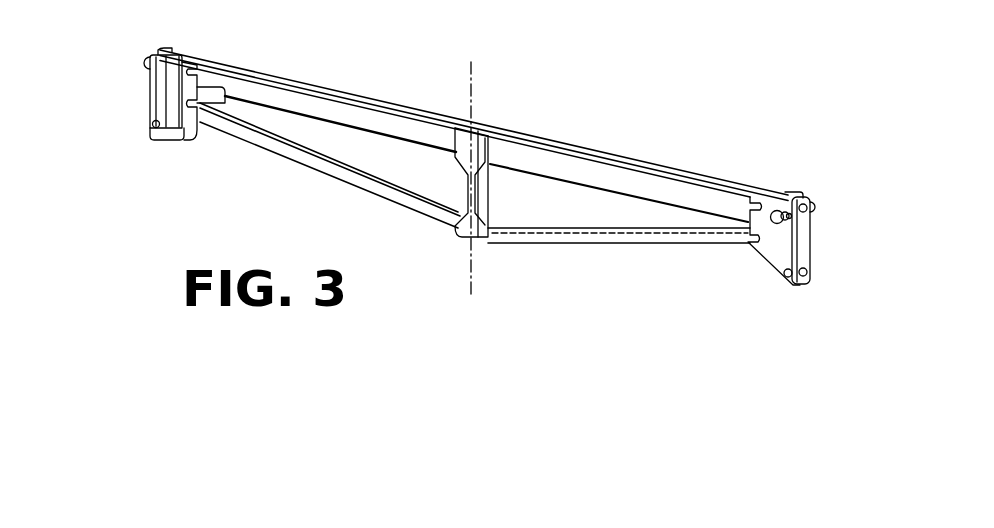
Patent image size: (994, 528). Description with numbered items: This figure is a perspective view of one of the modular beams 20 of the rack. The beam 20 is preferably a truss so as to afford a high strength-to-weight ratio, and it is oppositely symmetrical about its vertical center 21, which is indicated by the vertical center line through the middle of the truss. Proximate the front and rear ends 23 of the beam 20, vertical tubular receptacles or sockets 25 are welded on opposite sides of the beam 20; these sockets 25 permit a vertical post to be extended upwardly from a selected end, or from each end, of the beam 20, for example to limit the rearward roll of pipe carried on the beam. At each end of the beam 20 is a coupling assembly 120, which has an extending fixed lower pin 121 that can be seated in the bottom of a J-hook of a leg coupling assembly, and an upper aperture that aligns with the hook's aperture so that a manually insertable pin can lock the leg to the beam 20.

The modular beam 20 is at (463, 181).
The vertical center 21 is at (468, 98).
The front and rear ends 23 is at (195, 56).
The vertical tubular receptacle or socket 25 is at (185, 136).
The coupling assembly 120 is at (163, 136).
The fixed lower pin 121 is at (150, 125).